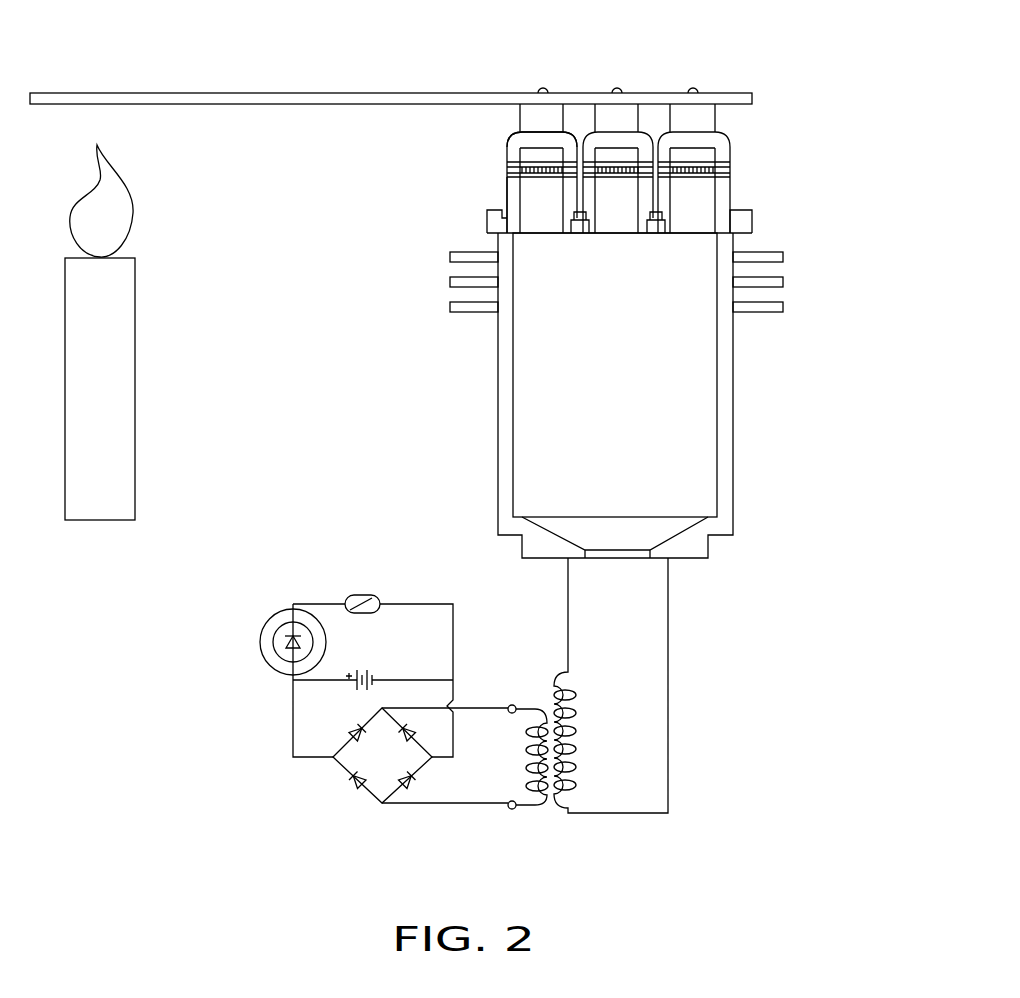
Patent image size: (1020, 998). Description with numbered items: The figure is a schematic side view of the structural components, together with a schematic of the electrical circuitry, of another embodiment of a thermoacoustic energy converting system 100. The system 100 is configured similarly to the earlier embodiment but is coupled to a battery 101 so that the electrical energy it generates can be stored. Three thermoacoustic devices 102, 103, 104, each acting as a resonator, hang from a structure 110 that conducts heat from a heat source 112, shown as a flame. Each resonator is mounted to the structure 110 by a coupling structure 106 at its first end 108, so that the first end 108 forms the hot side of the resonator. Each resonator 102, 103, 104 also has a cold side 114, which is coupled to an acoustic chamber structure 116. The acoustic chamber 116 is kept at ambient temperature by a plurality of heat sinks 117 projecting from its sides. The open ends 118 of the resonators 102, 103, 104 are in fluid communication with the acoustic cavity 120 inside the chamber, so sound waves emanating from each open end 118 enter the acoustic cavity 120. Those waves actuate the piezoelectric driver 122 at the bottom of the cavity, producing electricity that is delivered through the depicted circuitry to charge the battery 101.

The thermoacoustic energy converting system 100 is at (404, 290).
The battery 101 is at (367, 664).
The thermoacoustic device 102 is at (530, 113).
The thermoacoustic device 103 is at (605, 117).
The thermoacoustic device 104 is at (680, 117).
The coupling structure 106 is at (708, 118).
The first end 108 is at (508, 140).
The structure 110 is at (362, 93).
The heat source 112 is at (125, 200).
The cold side 114 is at (512, 188).
The acoustic chamber structure 116 is at (728, 458).
The heat sinks 117 is at (786, 278).
The open end 118 is at (540, 238).
The acoustic cavity 120 is at (632, 411).
The piezoelectric driver 122 is at (655, 545).